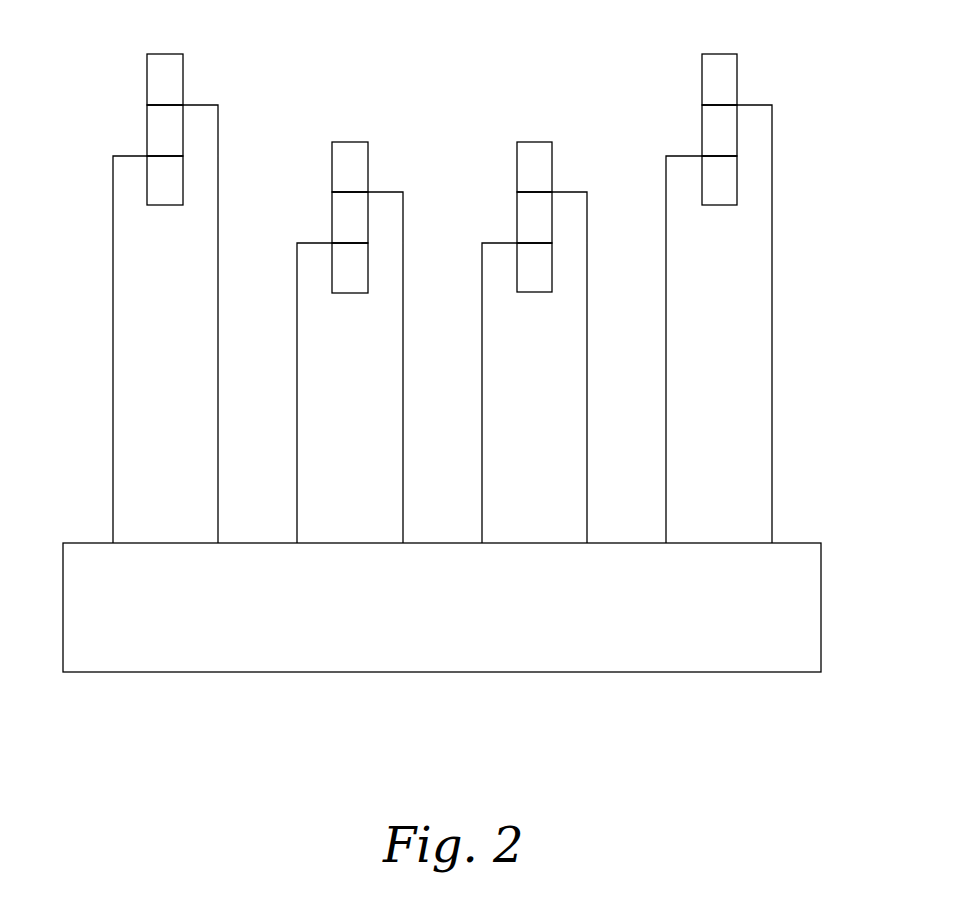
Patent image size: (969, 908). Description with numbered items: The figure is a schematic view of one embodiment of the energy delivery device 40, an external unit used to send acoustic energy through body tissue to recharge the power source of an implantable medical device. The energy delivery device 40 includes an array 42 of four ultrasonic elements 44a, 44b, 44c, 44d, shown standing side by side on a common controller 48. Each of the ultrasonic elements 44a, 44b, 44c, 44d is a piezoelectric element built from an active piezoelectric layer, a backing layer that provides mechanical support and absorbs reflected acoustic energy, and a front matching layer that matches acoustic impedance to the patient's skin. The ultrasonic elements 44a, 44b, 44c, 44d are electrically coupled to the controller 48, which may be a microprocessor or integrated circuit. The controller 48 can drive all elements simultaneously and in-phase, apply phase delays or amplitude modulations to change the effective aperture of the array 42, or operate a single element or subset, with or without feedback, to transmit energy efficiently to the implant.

The energy delivery device 40 is at (174, 735).
The array 42 is at (809, 180).
The ultrasonic element 44a is at (136, 74).
The ultrasonic element 44b is at (321, 159).
The ultrasonic element 44c is at (506, 159).
The ultrasonic element 44d is at (691, 74).
The controller 48 is at (445, 542).